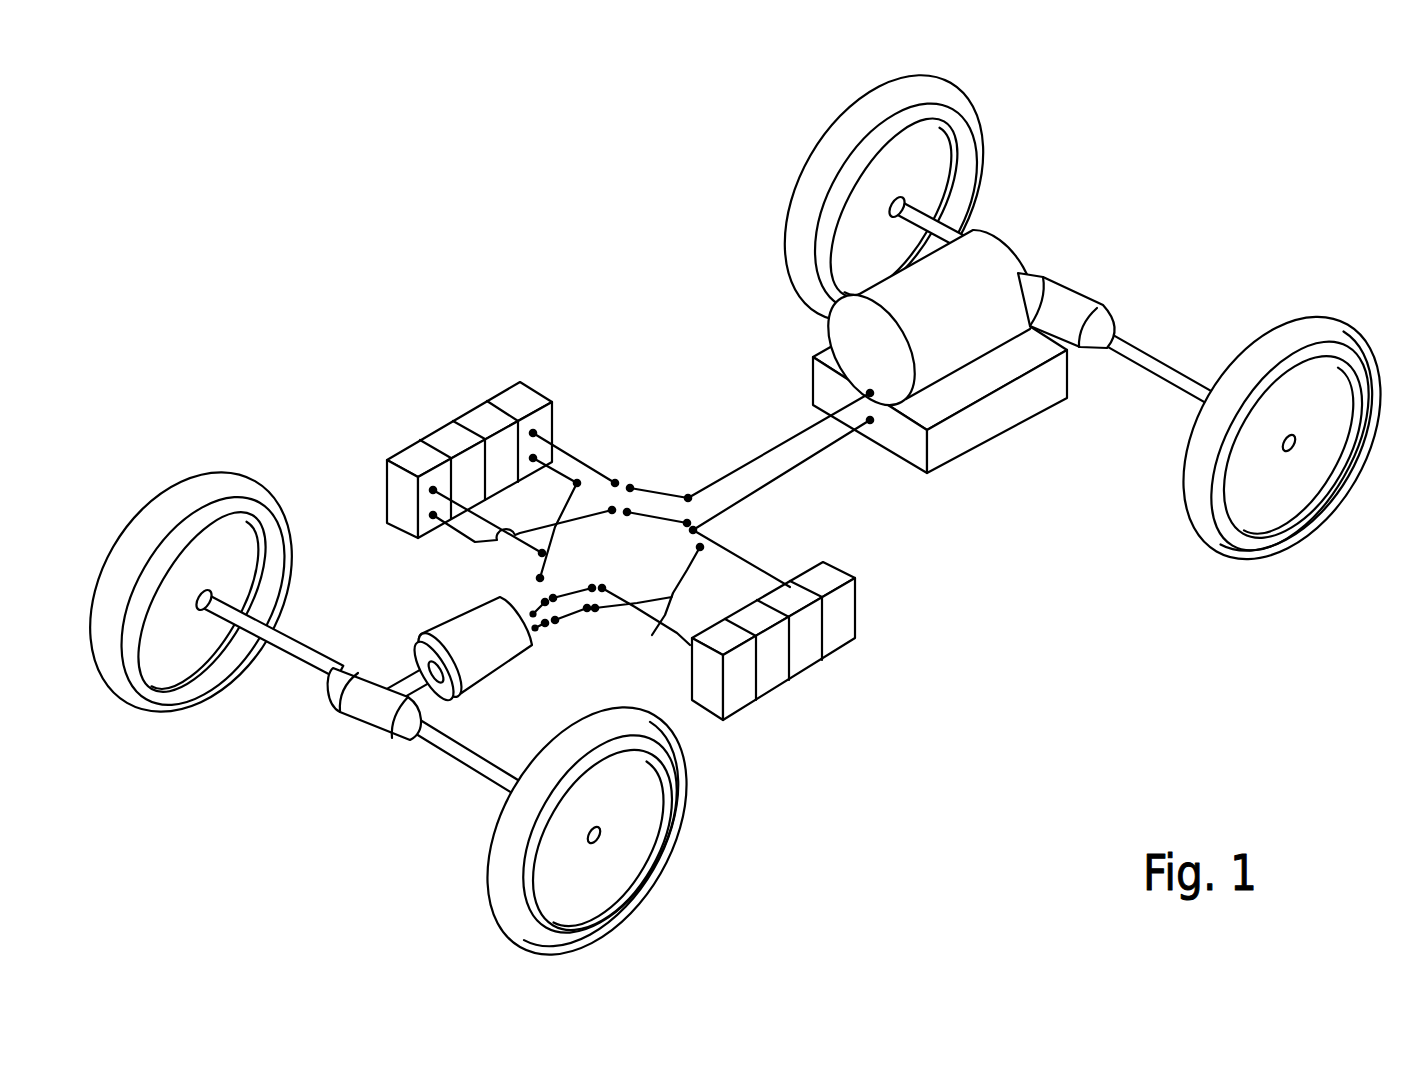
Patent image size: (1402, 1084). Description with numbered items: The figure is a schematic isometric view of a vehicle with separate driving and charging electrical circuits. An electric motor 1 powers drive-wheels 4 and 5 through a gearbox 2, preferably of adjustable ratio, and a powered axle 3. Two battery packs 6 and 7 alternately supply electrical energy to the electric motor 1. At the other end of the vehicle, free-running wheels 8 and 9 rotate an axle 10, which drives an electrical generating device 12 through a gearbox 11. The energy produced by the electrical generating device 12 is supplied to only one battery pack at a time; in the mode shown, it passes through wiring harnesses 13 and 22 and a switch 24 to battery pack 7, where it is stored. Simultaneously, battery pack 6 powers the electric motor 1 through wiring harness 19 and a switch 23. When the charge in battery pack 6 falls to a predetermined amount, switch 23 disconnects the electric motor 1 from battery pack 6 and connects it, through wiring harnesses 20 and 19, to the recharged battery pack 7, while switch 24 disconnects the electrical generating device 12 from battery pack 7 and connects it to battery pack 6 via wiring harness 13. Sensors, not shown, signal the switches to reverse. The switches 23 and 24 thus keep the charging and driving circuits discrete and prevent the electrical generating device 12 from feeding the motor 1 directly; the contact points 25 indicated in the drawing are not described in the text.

The electric motor 1 is at (848, 335).
The gearbox 2 is at (1085, 282).
The powered axle 3 is at (933, 213).
The drive-wheel 4 is at (815, 190).
The drive-wheel 5 is at (1315, 327).
The battery pack 6 is at (452, 420).
The battery pack 7 is at (840, 623).
The free-running wheel 8 is at (200, 497).
The free-running wheel 9 is at (668, 830).
The axle 10 is at (287, 663).
The gearbox 11 is at (340, 707).
The electrical generating device 12 is at (432, 638).
The wiring harness 13 is at (536, 628).
The wiring harness 19 is at (734, 484).
The wiring harness 20 is at (700, 573).
The wiring harness 22 is at (535, 571).
The switch 23 is at (706, 523).
The switch 24 is at (570, 583).
The switch contacts 25 is at (585, 501).